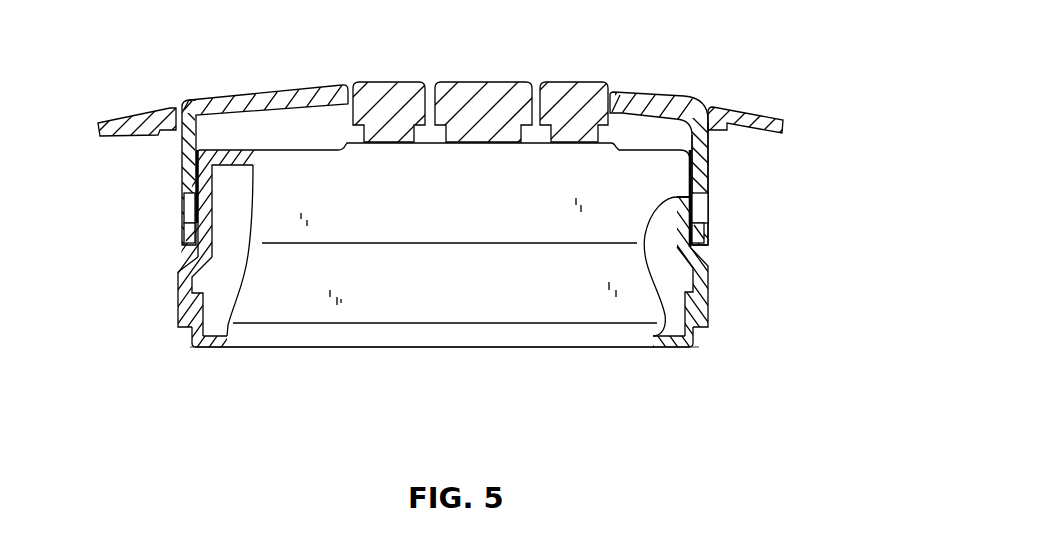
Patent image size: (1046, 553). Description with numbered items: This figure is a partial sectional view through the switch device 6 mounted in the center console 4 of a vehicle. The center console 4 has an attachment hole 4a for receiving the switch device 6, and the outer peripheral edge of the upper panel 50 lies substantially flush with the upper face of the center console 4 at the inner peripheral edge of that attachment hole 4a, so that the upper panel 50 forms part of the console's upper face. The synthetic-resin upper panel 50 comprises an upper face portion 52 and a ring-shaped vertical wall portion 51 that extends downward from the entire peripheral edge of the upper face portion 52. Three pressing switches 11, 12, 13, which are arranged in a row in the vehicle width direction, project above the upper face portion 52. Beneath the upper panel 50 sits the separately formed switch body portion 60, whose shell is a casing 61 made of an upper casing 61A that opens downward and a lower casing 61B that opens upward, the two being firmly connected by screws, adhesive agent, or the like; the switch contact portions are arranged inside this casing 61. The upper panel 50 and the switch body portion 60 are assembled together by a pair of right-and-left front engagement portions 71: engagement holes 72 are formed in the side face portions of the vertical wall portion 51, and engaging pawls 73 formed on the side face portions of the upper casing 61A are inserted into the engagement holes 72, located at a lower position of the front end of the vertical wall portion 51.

The center console 4 is at (124, 120).
The attachment hole 4a is at (190, 104).
The switch device 6 is at (303, 356).
The pressing switch 11 is at (569, 92).
The pressing switch 12 is at (476, 88).
The pressing switch 13 is at (383, 80).
The upper panel 50 is at (283, 90).
The vertical wall portion 51 is at (710, 165).
The upper face portion 52 is at (641, 98).
The switch body portion 60 is at (507, 303).
The casing 61 is at (381, 297).
The upper casing 61A is at (180, 275).
The lower casing 61B is at (190, 340).
The front engagement portion 71 is at (444, 218).
The engagement hole 72 is at (187, 205).
The engaging pawl 73 is at (187, 222).